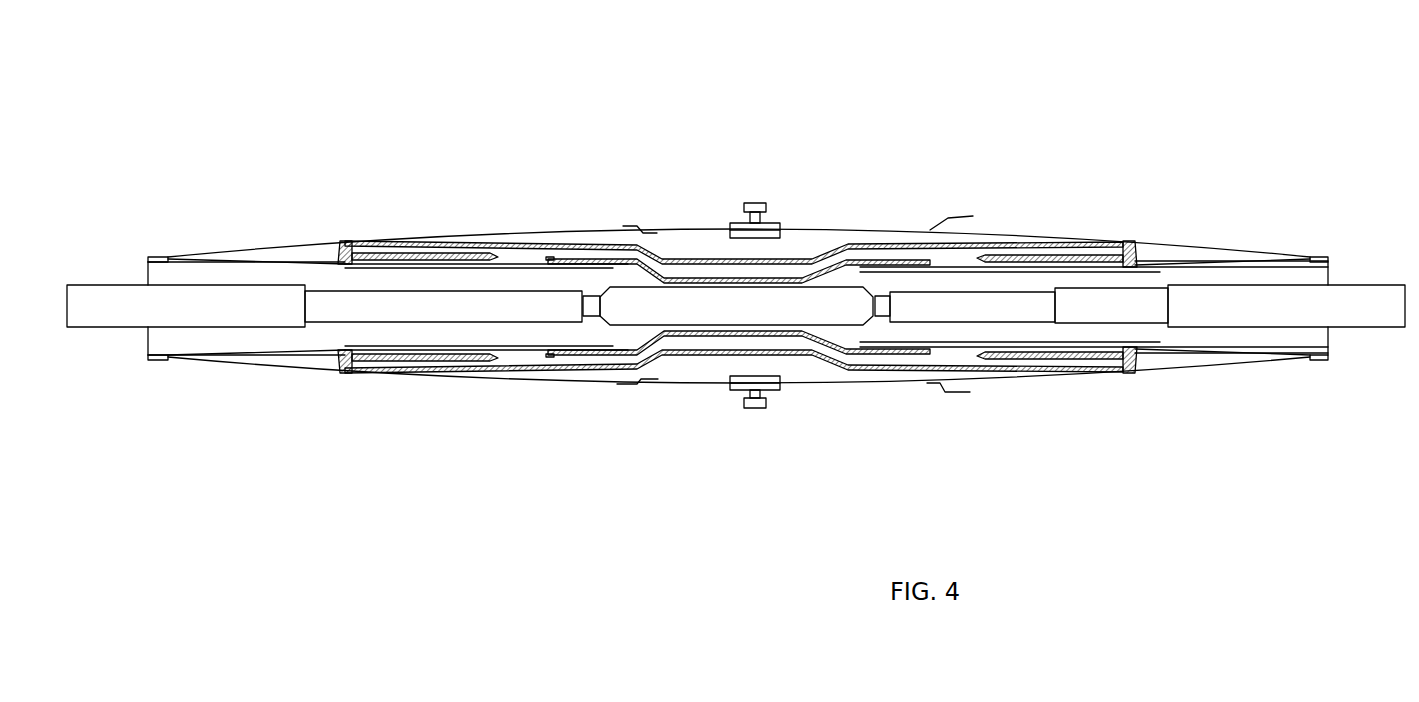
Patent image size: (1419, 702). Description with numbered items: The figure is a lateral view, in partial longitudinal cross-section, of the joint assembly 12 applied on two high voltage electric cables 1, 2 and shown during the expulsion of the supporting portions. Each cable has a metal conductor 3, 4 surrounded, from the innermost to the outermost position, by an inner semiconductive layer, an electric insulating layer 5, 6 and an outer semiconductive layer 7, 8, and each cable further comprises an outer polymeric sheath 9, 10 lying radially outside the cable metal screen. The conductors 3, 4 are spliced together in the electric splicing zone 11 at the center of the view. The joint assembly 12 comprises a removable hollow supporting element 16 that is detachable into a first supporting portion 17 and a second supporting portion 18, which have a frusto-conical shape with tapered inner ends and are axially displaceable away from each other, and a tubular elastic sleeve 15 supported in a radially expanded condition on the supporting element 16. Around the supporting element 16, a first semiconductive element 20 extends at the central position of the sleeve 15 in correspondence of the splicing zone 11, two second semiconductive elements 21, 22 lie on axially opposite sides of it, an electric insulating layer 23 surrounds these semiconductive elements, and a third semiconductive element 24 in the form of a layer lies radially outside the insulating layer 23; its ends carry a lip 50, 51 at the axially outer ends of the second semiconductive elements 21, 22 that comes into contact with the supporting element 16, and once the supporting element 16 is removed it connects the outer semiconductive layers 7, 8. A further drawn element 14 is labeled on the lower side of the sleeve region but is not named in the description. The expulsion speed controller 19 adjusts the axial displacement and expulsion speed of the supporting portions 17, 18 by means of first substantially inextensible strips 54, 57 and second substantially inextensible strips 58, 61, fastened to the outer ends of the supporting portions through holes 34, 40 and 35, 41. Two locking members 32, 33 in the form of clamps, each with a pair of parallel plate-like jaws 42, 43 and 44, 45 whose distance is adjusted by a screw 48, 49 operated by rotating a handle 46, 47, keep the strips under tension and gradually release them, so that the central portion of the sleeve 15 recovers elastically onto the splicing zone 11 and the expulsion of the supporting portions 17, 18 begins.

The high voltage electric cable 1 is at (113, 327).
The high voltage electric cable 2 is at (1368, 329).
The metal conductor 3 is at (590, 306).
The metal conductor 4 is at (885, 312).
The electric insulating layer 5 is at (462, 307).
The electric insulating layer 6 is at (1024, 308).
The outer semiconductive layer 7 is at (367, 305).
The outer semiconductive layer 8 is at (1155, 308).
The outer polymeric sheath 9 is at (228, 298).
The outer polymeric sheath 10 is at (1287, 310).
The electric splicing zone 11 is at (620, 329).
The joint assembly 12 is at (650, 166).
The lower membrane 14 is at (676, 355).
The tubular elastic sleeve 15 is at (548, 231).
The removable hollow supporting element 16 is at (290, 355).
The first supporting portion 17 is at (240, 258).
The second supporting portion 18 is at (1230, 258).
The expulsion speed controller 19 is at (802, 396).
The first semiconductive element 20 is at (690, 266).
The second semiconductive element 21 is at (413, 254).
The second semiconductive element 22 is at (1077, 256).
The electric insulating layer 23 is at (598, 240).
The third semiconductive element 24 is at (442, 240).
The locking member 32 is at (781, 222).
The locking member 33 is at (730, 388).
The hole 34 is at (163, 256).
The hole 35 is at (1316, 257).
The hole 40 is at (163, 361).
The hole 41 is at (1313, 361).
The jaw 42 is at (733, 236).
The jaw 43 is at (795, 240).
The jaw 44 is at (773, 390).
The jaw 45 is at (795, 389).
The handle 46 is at (760, 203).
The handle 47 is at (757, 409).
The screw 48 is at (740, 242).
The screw 49 is at (752, 375).
The lip 50 is at (342, 256).
The lip 51 is at (1133, 254).
The first substantially inextensible strip 54 is at (497, 232).
The first substantially inextensible strip 57 is at (430, 374).
The second substantially inextensible strip 58 is at (985, 232).
The second substantially inextensible strip 61 is at (1074, 374).